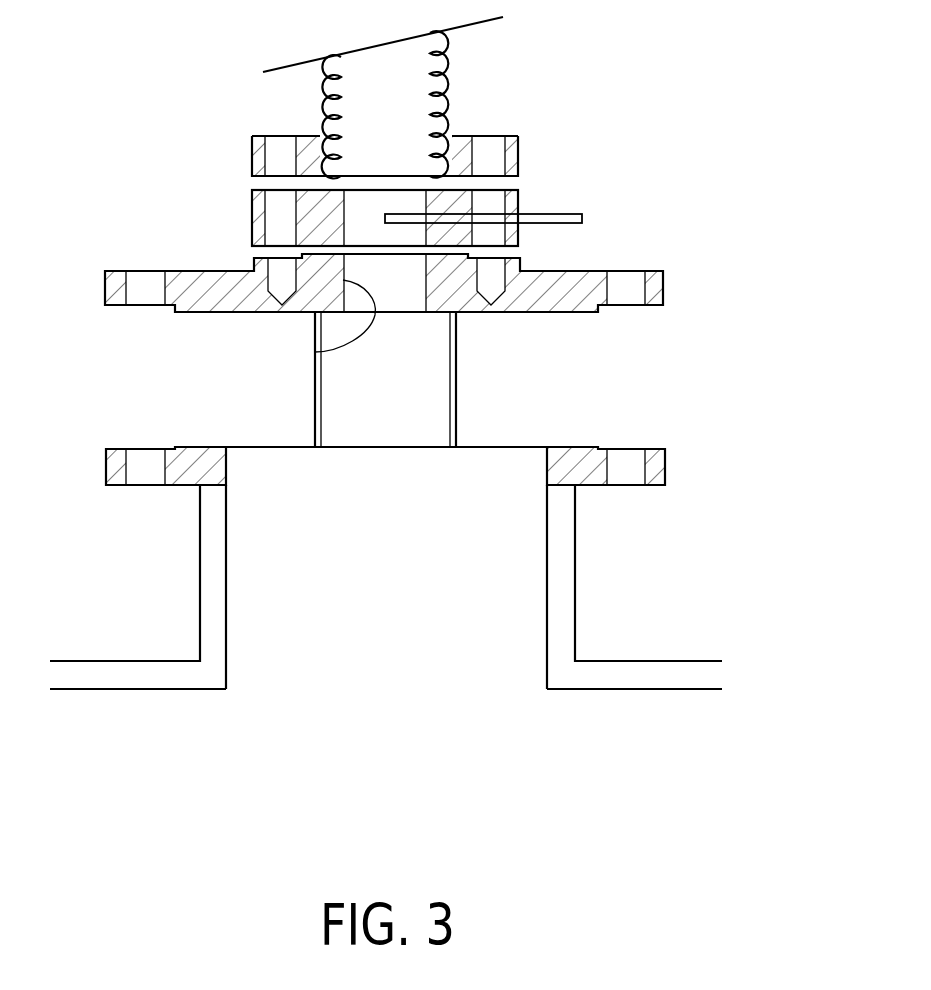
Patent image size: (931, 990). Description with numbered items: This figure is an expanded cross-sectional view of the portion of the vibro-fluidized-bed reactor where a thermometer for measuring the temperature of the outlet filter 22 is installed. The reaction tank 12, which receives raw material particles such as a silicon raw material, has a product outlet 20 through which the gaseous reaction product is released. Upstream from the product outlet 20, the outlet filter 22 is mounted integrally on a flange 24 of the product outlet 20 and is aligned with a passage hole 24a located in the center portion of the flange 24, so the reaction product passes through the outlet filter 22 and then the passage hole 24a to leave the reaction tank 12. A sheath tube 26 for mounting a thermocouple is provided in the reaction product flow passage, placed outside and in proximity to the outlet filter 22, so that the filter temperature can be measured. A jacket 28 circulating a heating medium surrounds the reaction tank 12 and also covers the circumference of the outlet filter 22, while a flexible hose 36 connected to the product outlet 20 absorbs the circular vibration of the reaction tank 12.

The reaction tank 12 is at (706, 688).
The product outlet 20 is at (599, 438).
The outlet filter 22 is at (457, 387).
The flange 24 is at (585, 313).
The passage hole 24a is at (315, 352).
The sheath tube 26 is at (563, 212).
The jacket 28 is at (200, 525).
The flexible hose 36 is at (450, 73).